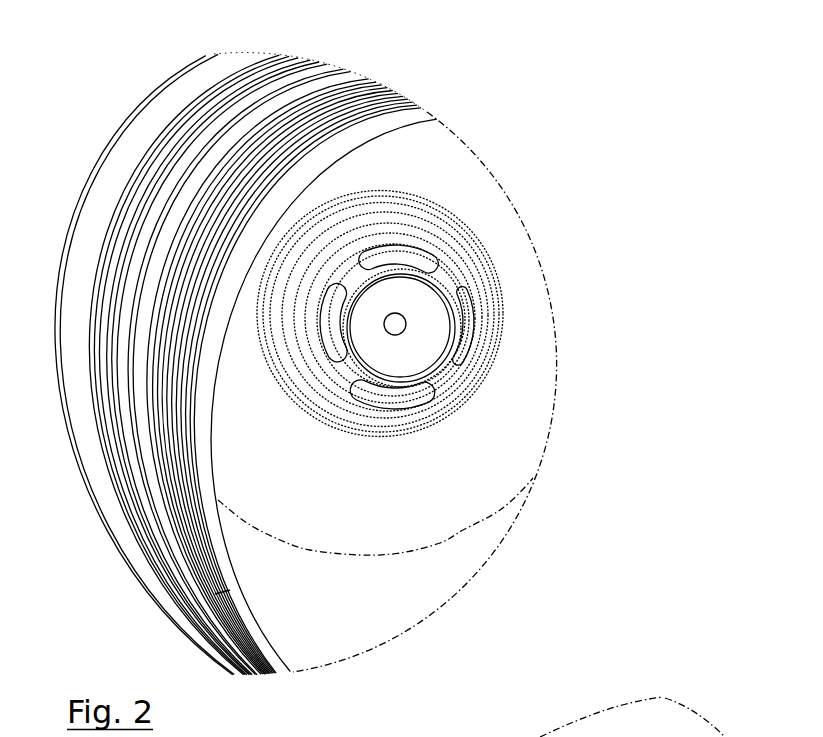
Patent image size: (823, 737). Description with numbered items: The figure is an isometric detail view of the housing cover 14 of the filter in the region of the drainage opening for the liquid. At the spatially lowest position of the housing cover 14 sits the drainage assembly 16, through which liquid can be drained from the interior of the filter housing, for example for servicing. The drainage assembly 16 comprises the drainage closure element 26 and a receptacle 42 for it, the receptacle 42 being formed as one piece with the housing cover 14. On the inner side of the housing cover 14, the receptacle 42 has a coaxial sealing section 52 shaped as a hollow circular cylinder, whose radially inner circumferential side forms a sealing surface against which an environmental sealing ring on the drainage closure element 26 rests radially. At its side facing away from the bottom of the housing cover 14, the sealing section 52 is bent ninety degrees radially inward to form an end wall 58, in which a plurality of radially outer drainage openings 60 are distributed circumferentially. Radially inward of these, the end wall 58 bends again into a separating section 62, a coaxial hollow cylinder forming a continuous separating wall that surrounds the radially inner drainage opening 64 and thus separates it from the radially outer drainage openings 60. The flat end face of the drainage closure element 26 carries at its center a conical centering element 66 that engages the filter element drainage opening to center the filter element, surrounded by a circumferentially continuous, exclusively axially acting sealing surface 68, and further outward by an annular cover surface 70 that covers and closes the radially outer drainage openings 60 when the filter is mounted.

The housing cover 14 is at (147, 85).
The drainage assembly 16 is at (520, 320).
The drainage closure element 26 is at (404, 368).
The receptacle 42 is at (487, 367).
The sealing section 52 is at (388, 227).
The end wall 58 is at (453, 387).
The radially outer drainage openings 60 is at (400, 252).
The separating section 62 is at (355, 380).
The radially inner drainage opening 64 is at (425, 315).
The centering element 66 is at (392, 325).
The sealing surface 68 is at (442, 333).
The annular cover surface 70 is at (415, 257).